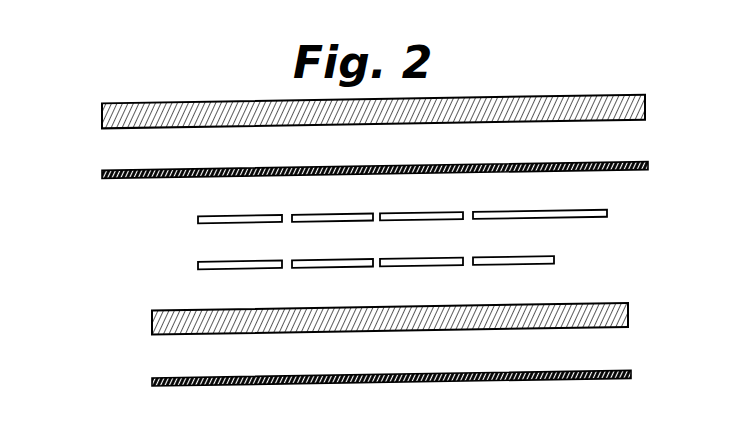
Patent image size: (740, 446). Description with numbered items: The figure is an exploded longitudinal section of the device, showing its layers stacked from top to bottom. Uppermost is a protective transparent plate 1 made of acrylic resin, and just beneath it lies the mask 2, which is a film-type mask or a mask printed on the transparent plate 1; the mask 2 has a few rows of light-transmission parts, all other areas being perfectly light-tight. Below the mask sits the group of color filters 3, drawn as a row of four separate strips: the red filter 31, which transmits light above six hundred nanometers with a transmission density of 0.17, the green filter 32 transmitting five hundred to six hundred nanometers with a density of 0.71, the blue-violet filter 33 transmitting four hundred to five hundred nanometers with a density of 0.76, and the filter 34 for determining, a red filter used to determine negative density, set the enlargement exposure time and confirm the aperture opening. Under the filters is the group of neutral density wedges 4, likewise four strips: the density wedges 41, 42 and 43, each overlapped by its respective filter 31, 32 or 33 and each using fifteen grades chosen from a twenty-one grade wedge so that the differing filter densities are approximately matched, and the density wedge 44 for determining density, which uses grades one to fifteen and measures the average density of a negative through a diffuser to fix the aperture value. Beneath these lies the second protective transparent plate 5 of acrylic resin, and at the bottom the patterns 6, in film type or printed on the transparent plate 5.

The protective transparent plate 1 is at (102, 117).
The mask 2 is at (102, 177).
The group of color filters 3 is at (360, 208).
The group of neutral density wedges 4 is at (334, 255).
The protective transparent plate 5 is at (152, 325).
The patterns 6 is at (152, 386).
The red filter 31 is at (226, 213).
The green filter 32 is at (316, 212).
The blue-violet filter 33 is at (406, 211).
The filter for determining 34 is at (523, 208).
The density wedge 41 is at (224, 261).
The density wedge 42 is at (317, 258).
The density wedge 43 is at (402, 258).
The density wedge for determining density 44 is at (502, 257).